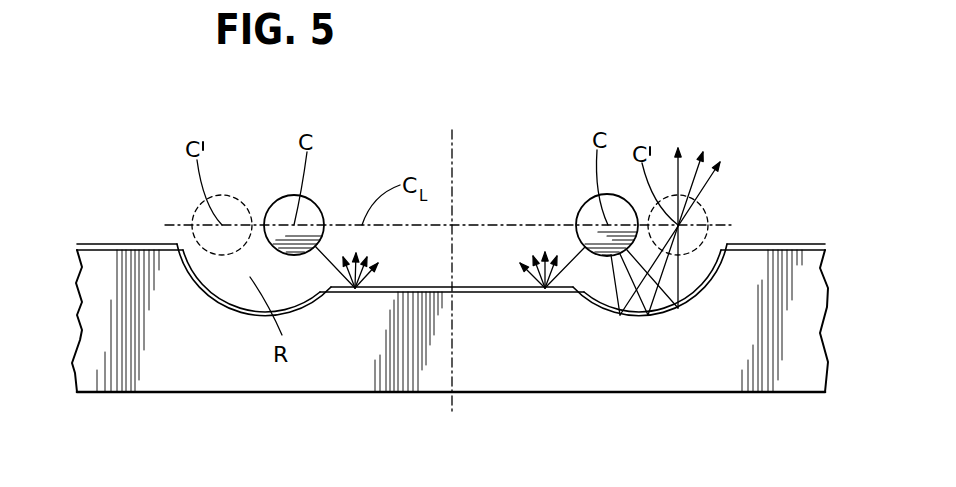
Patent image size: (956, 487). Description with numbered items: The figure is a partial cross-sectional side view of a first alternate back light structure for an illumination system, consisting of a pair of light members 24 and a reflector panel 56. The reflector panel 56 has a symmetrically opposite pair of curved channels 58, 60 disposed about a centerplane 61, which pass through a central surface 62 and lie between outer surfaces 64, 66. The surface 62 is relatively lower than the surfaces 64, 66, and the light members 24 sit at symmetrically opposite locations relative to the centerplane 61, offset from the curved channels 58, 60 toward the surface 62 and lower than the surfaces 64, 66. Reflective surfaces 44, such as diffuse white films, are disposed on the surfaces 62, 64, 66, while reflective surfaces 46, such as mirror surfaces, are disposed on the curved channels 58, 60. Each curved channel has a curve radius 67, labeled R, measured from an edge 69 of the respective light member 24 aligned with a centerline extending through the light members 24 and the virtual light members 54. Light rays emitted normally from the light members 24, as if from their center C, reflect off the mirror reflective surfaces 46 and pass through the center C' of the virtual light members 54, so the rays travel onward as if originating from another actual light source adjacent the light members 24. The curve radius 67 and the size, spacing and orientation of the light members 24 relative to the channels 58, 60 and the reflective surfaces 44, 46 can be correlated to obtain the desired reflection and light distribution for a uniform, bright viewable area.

The light member 24 is at (323, 215).
The reflective surface 44 is at (110, 245).
The reflective surface 46 is at (207, 297).
The virtual light member 54 is at (193, 213).
The reflector panel 56 is at (523, 393).
The curved channel 58 is at (297, 311).
The curved channel 60 is at (615, 314).
The centerplane 61 is at (453, 160).
The surface 62 is at (482, 292).
The surface 64 is at (115, 253).
The surface 66 is at (788, 248).
The curve radius 67 is at (248, 313).
The edge 69 is at (242, 313).